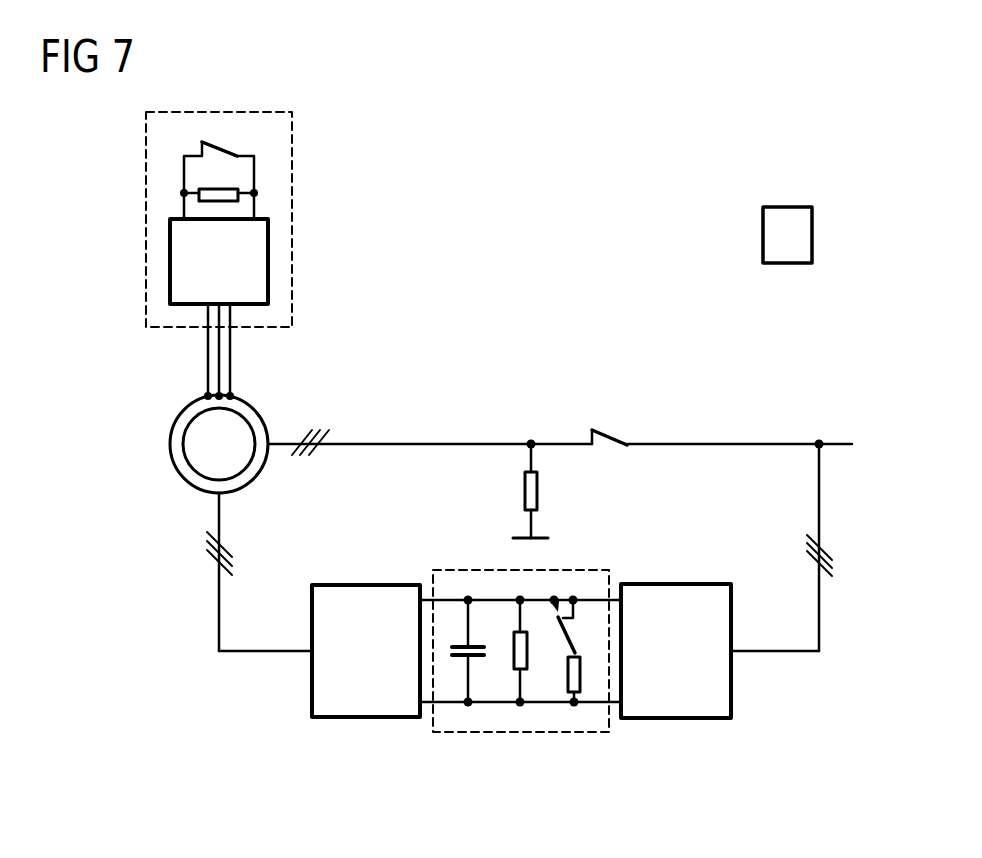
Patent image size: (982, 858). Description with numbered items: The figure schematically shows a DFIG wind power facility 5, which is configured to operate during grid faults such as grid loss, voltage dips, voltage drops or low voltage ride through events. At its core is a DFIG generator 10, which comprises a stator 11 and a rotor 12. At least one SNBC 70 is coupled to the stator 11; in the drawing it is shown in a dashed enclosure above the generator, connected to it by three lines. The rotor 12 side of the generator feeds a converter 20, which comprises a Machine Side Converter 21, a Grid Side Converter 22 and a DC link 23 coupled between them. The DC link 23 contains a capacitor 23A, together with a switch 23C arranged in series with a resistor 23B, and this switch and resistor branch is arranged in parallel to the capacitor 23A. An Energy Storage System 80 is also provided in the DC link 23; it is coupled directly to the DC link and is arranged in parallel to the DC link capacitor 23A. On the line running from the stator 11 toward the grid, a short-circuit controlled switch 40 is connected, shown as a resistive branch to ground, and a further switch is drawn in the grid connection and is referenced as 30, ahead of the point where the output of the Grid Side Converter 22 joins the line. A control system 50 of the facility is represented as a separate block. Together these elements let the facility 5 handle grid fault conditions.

The DFIG wind power facility 5 is at (619, 200).
The DFIG generator 10 is at (180, 431).
The stator 11 is at (170, 443).
The rotor 12 is at (187, 463).
The converter 20 is at (520, 653).
The Machine Side Converter 21 is at (312, 693).
The Grid Side Converter 22 is at (731, 693).
The DC link 23 is at (520, 653).
The capacitor 23A is at (462, 658).
The resistor 23B is at (581, 671).
The switch 23C is at (554, 600).
The grid switch 30 is at (619, 405).
The short-circuit controlled switch 40 is at (513, 491).
The control system 50 is at (812, 232).
The SNBC 70 is at (146, 228).
The Energy Storage System 80 is at (513, 657).